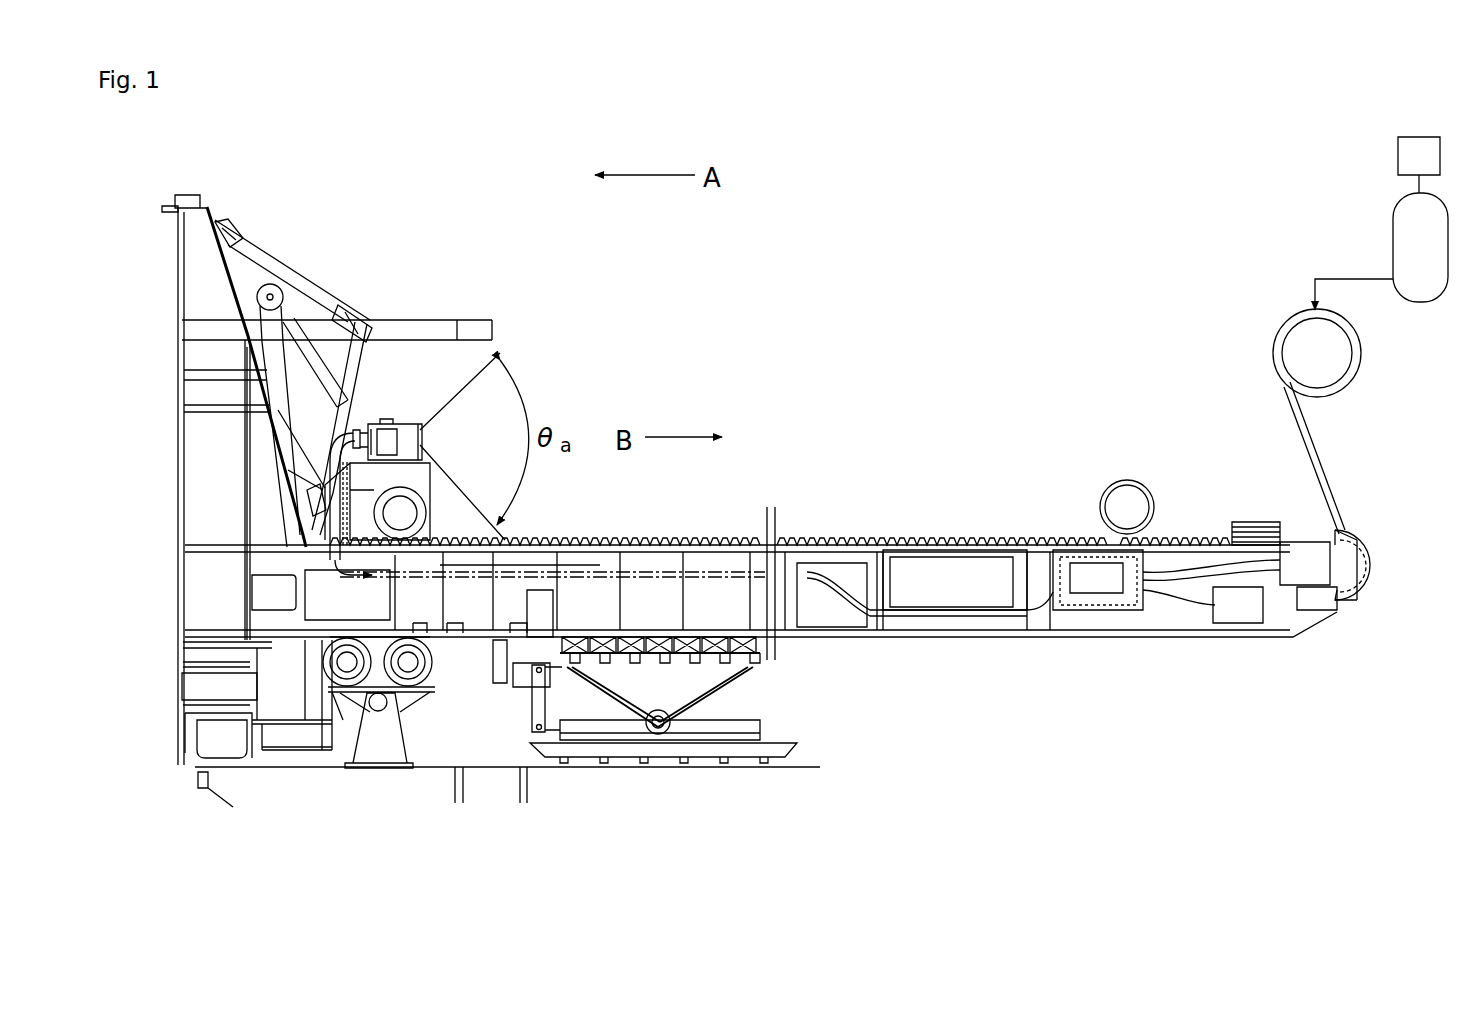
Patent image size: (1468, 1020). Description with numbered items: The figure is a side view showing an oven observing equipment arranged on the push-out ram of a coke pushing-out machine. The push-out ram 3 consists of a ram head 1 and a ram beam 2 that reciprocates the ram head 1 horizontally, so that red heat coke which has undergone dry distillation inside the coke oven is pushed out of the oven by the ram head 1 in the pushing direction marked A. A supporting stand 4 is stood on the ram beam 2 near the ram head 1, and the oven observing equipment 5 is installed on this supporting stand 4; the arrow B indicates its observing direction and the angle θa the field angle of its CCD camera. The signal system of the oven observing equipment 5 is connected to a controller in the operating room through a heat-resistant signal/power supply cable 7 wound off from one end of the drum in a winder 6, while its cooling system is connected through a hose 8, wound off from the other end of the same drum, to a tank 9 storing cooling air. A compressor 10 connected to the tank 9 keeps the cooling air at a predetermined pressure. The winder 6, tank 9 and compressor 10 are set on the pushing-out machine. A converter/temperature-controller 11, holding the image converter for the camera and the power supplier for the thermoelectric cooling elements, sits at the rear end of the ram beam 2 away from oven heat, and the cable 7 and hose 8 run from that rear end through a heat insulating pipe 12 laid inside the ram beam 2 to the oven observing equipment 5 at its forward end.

The ram head 1 is at (202, 283).
The ram beam 2 is at (830, 543).
The push-out ram 3 is at (660, 381).
The supporting stand 4 is at (428, 495).
The oven observing equipment 5 is at (395, 398).
The winder 6 is at (1382, 356).
The signal/power supply cable 7 is at (1332, 448).
The hose 8 is at (1312, 440).
The tank 9 is at (1393, 255).
The compressor 10 is at (1400, 152).
The converter/temperature-controller 11 is at (1088, 563).
The heat insulating pipe 12 is at (636, 572).